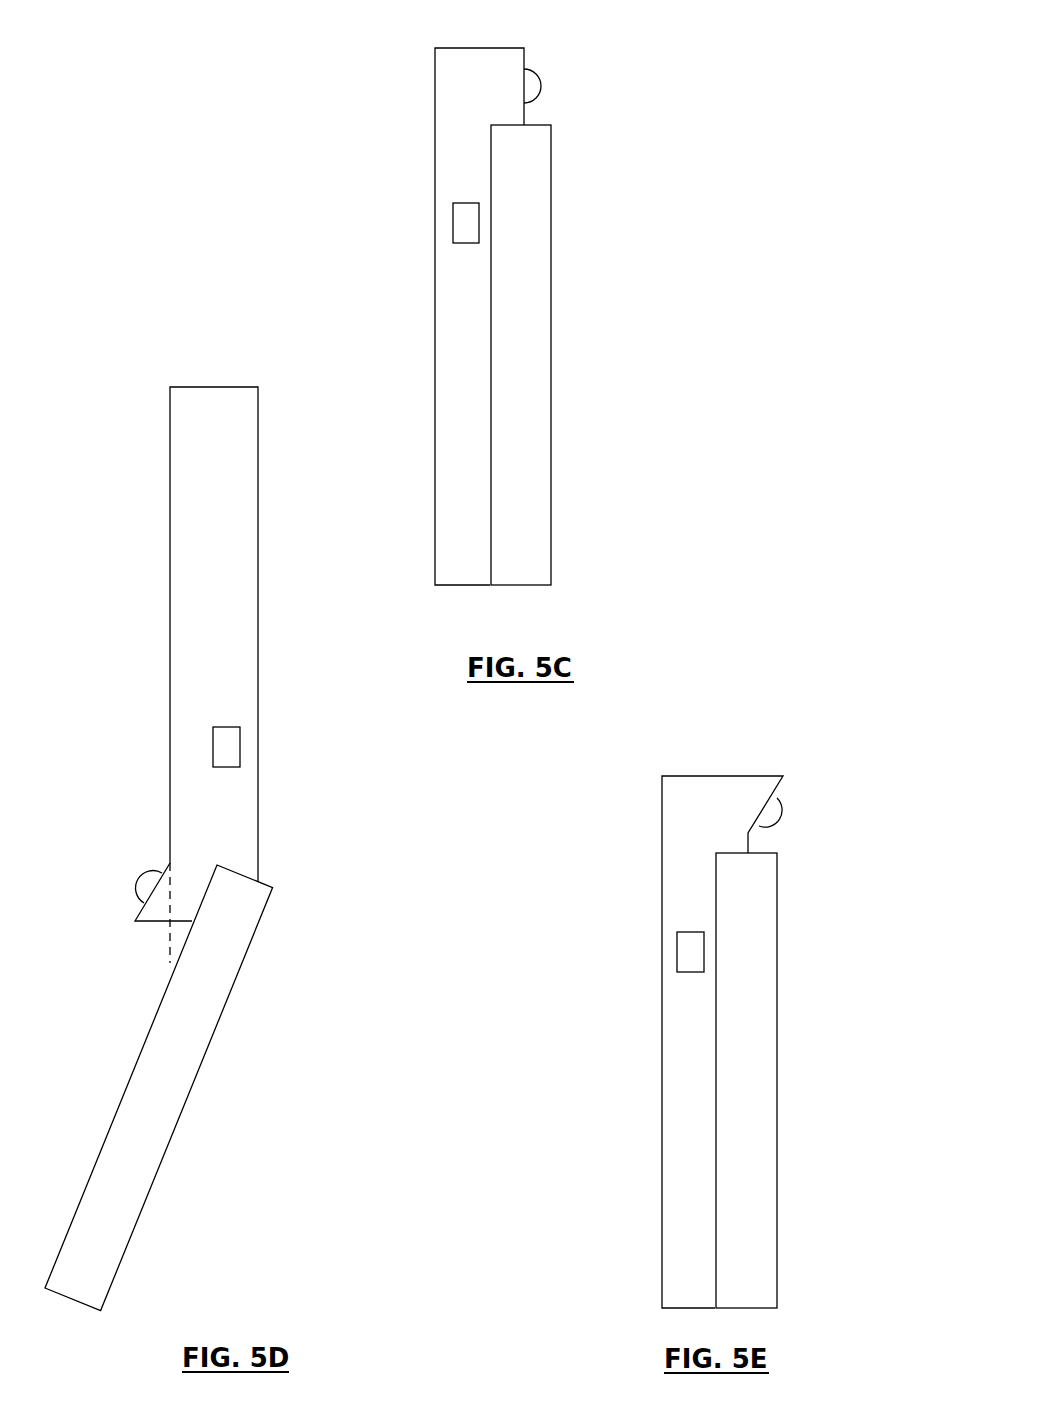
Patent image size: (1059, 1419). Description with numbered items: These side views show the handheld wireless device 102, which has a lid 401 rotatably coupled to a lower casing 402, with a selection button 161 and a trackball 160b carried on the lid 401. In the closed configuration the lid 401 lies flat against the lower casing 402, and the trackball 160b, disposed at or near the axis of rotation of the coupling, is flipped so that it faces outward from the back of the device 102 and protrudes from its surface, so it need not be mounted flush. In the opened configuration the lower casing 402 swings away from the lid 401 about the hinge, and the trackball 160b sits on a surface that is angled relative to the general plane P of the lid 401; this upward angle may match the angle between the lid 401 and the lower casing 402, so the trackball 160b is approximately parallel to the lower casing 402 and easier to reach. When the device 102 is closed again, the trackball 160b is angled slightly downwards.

In FIG. 5C, the wireless device 102 is at (547, 297).
In FIG. 5D, the wireless device 102 is at (234, 849).
In FIG. 5E, the wireless device 102 is at (739, 995).
In FIG. 5C, the trackball 160b is at (542, 86).
In FIG. 5D, the trackball 160b is at (140, 870).
In FIG. 5E, the trackball 160b is at (786, 815).
In FIG. 5C, the selection button 161 is at (452, 222).
In FIG. 5D, the selection button 161 is at (213, 733).
In FIG. 5E, the selection button 161 is at (677, 947).
In FIG. 5C, the lid 401 is at (450, 428).
In FIG. 5D, the lid 401 is at (198, 652).
In FIG. 5E, the lid 401 is at (676, 1155).
In FIG. 5C, the lower casing 402 is at (528, 407).
In FIG. 5D, the lower casing 402 is at (182, 1080).
In FIG. 5E, the lower casing 402 is at (755, 1130).
In FIG. 5D, the general plane P is at (160, 937).